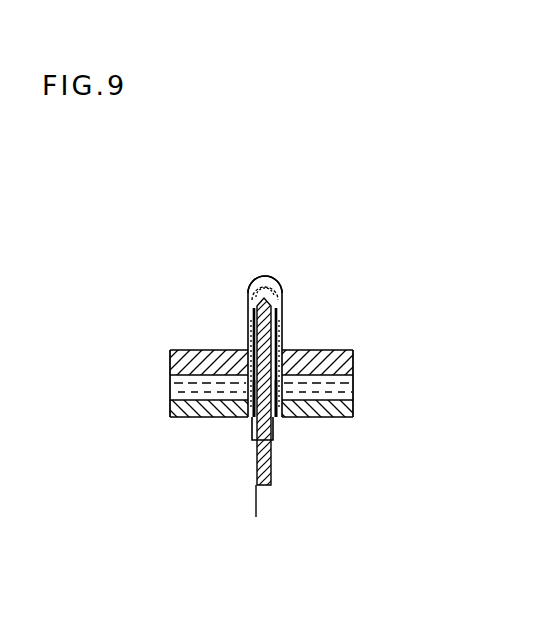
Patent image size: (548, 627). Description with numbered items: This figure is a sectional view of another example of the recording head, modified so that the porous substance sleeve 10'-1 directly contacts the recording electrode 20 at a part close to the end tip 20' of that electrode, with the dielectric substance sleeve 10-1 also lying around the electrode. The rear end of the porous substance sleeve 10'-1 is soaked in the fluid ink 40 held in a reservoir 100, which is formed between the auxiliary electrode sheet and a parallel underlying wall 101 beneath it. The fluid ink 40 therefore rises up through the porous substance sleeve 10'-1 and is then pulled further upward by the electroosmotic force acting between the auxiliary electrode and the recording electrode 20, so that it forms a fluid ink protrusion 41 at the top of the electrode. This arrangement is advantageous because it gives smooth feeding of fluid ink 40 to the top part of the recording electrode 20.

The fluid ink 40 is at (354, 395).
The reservoir 100 is at (173, 385).
The underlying wall 101 is at (185, 408).
The recording electrode 20 is at (288, 407).
The end tip 20' is at (260, 329).
The fluid ink protrusion 41 is at (280, 276).
The porous substance sleeve 10'-1 is at (304, 341).
The dielectric substance sleeve 10-1 is at (277, 333).